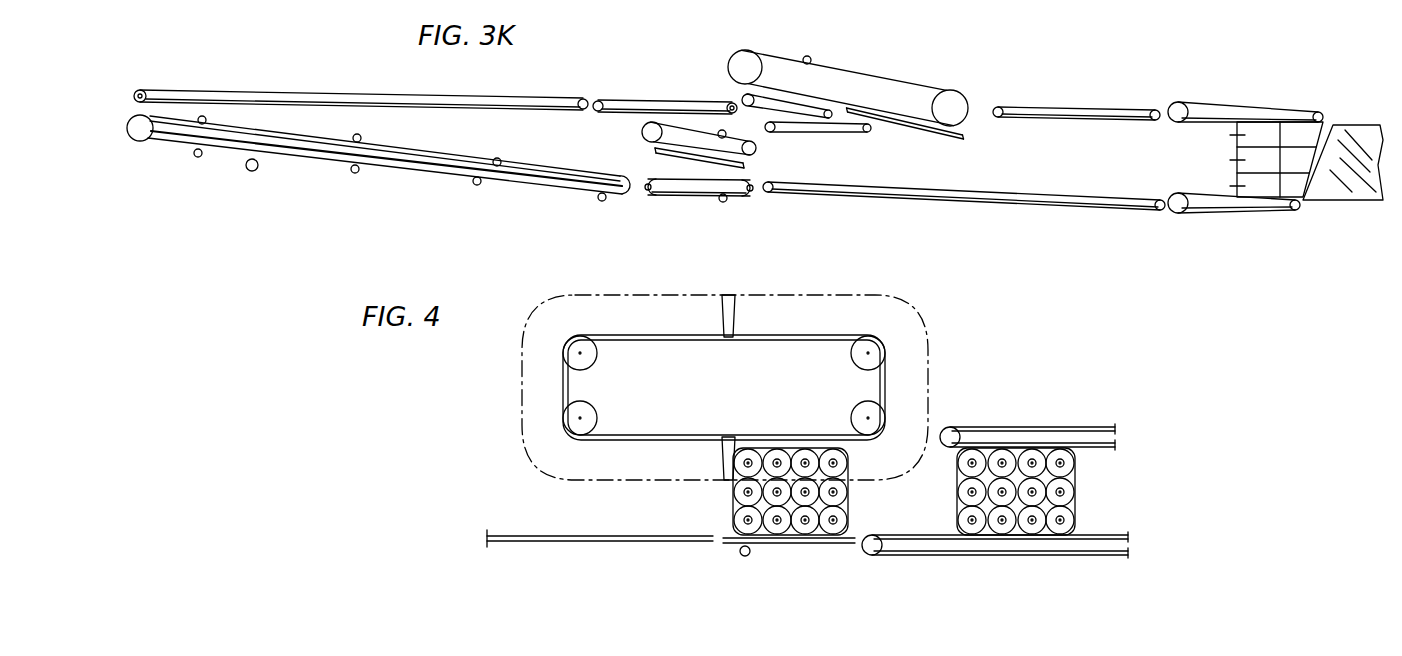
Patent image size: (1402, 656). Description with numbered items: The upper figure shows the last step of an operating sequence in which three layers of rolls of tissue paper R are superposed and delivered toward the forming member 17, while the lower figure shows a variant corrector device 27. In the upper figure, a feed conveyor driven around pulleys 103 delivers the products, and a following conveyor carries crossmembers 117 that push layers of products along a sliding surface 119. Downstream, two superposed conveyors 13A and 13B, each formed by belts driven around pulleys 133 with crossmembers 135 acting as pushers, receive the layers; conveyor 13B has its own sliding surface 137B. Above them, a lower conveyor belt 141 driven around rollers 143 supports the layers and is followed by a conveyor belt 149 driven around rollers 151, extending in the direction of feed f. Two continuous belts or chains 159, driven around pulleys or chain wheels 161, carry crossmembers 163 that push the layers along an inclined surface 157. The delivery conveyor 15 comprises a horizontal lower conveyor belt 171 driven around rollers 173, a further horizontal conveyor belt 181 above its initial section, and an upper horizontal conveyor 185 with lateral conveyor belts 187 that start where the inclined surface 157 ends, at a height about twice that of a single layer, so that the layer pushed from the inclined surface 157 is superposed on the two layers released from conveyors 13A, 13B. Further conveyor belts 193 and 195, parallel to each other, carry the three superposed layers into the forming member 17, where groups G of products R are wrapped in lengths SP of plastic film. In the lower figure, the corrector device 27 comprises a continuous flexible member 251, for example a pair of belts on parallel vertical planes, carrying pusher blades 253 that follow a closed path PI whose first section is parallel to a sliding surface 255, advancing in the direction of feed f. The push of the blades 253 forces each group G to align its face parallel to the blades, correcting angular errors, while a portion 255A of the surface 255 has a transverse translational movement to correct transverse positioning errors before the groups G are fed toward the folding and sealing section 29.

In FIG. 3K, the lower conveyor belt 141 is at (323, 92).
In FIG. 3K, the rollers 143 is at (142, 90).
In FIG. 3K, the chain wheels or pulleys 103 is at (141, 142).
In FIG. 3K, the crossmembers 117 is at (355, 174).
In FIG. 3K, the sliding surface 119 is at (406, 162).
In FIG. 3K, the conveyor belt 149 is at (652, 100).
In FIG. 3K, the rollers 151 is at (726, 101).
In FIG. 3K, the conveyor 13B is at (640, 126).
In FIG. 3K, the sliding surface 137B is at (653, 152).
In FIG. 3K, the pulleys 133 is at (760, 149).
In FIG. 3K, the continuous belts or chains 159 is at (904, 86).
In FIG. 3K, the pulleys or chain wheels 161 is at (960, 100).
In FIG. 3K, the crossmembers 163 is at (812, 59).
In FIG. 3K, the horizontal conveyor belt 181 is at (836, 131).
In FIG. 3K, the inclined surface 157 is at (962, 141).
In FIG. 3K, the horizontal conveyor 185 is at (1083, 106).
In FIG. 3K, the conveyor belt 187 is at (1040, 94).
In FIG. 3K, the conveyor belt 193 is at (1249, 106).
In FIG. 3K, the conveyor belt 195 is at (1222, 207).
In FIG. 3K, the rolls of tissue paper R is at (1240, 142).
In FIG. 4, the rolls of tissue paper R is at (1072, 536).
In FIG. 3K, the forming member 17 is at (1343, 201).
In FIG. 3K, the horizontal lower conveyor belt 171 is at (1066, 201).
In FIG. 3K, the rollers 173 is at (772, 193).
In FIG. 3K, the delivery conveyor 15 is at (1098, 236).
In FIG. 3K, the conveyor 13A is at (710, 205).
In FIG. 3K, the crossmembers 135 is at (724, 203).
In FIG. 4, the corrector device 27 is at (838, 290).
In FIG. 4, the closed path PI is at (932, 349).
In FIG. 4, the continuous flexible member 251 is at (563, 390).
In FIG. 4, the blades 253 is at (721, 319).
In FIG. 4, the sliding surface 255 is at (540, 535).
In FIG. 4, the portion of surface 255A is at (812, 546).
In FIG. 4, the groups of products G is at (762, 550).
In FIG. 4, the lengths of plastic film SP is at (1078, 506).
In FIG. 4, the folding and sealing section 29 is at (1070, 402).
In FIG. 4, the direction of feed f is at (872, 515).